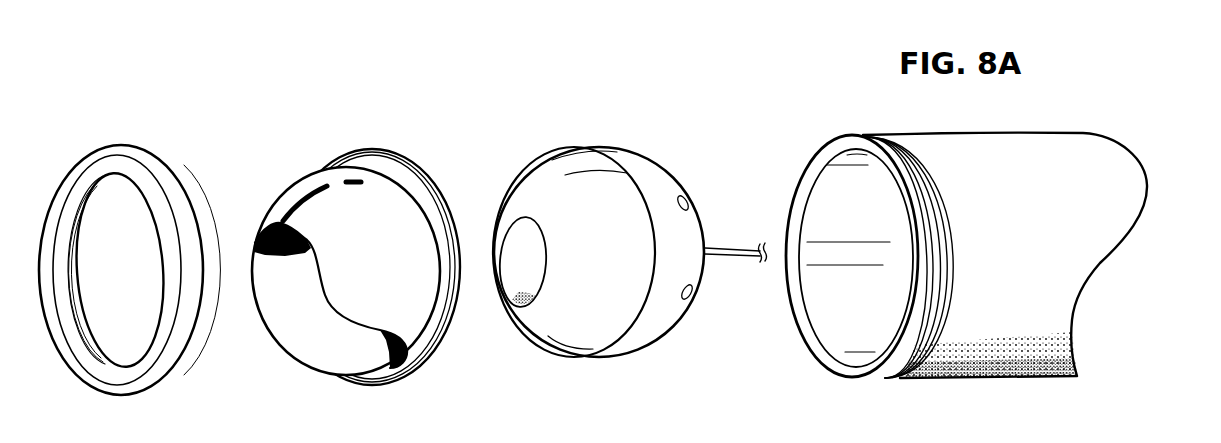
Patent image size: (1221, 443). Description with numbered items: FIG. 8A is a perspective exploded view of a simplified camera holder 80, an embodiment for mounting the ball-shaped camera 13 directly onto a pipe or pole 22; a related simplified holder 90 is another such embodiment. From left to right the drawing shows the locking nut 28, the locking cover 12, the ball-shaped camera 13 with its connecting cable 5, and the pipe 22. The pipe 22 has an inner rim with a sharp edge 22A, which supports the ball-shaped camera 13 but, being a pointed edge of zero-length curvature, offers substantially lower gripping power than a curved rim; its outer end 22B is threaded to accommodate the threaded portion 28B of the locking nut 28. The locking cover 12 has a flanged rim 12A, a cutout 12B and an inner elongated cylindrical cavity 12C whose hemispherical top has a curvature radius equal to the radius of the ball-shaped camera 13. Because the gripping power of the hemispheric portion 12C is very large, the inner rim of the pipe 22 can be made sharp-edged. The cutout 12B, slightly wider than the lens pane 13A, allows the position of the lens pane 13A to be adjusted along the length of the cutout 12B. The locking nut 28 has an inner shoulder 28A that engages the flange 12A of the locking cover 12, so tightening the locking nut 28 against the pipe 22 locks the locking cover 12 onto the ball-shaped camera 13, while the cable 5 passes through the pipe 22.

The simplified camera holder 80 is at (1146, 108).
The locking nut 28 is at (173, 368).
The inner shoulder 28A is at (62, 218).
The threaded portion 28B is at (80, 215).
The locking cover 12 is at (318, 184).
The flanged rim 12A is at (417, 170).
The cutout 12B is at (278, 338).
The inner elongated cylindrical cavity 12C is at (366, 357).
The ball-shaped camera 13 is at (620, 147).
The lens pane 13A is at (510, 247).
The connecting cable 5 is at (737, 257).
The pipe or pole 22 is at (1093, 147).
The sharp edge 22A is at (810, 172).
The outer end 22B is at (890, 367).
The simplified camera holder 90 is at (1190, 436).